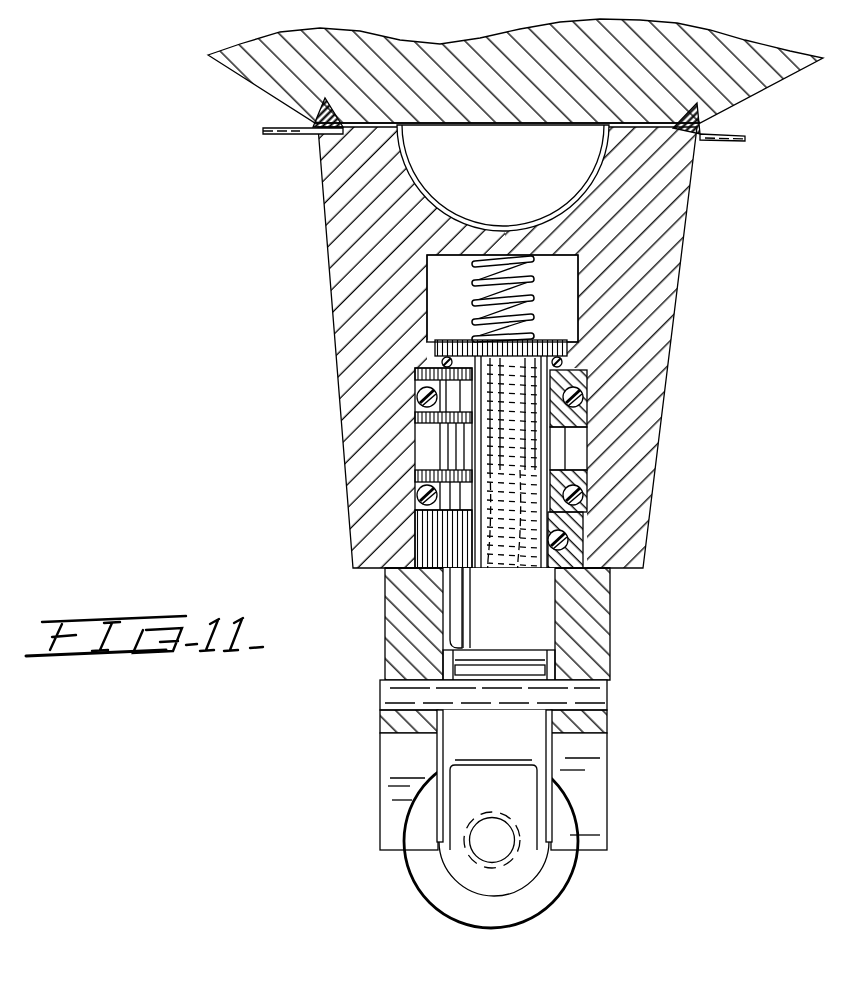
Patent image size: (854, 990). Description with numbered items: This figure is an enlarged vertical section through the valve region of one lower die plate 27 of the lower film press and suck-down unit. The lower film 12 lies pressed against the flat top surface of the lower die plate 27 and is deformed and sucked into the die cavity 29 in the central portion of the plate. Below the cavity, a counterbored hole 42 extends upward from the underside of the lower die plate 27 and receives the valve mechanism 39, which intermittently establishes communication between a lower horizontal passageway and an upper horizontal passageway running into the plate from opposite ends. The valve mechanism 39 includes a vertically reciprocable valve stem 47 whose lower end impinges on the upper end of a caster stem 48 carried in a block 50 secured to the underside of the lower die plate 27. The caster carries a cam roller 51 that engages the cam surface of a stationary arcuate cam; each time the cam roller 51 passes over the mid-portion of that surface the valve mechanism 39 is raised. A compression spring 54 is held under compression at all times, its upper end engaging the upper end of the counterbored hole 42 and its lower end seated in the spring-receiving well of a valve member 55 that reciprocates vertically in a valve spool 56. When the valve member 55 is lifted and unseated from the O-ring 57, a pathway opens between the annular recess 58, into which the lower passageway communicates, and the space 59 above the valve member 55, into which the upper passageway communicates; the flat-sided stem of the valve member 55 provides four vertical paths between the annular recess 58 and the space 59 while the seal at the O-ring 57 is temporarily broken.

The lower film 12 is at (305, 136).
The lower die plate 27 is at (328, 280).
The die cavity 29 is at (516, 182).
The valve mechanism 39 is at (432, 483).
The counterbored hole 42 is at (570, 462).
The valve stem 47 is at (552, 630).
The caster stem 48 is at (565, 660).
The block 50 is at (526, 804).
The cam roller 51 is at (577, 874).
The compression spring 54 is at (524, 326).
The valve member 55 is at (575, 345).
The valve spool 56 is at (595, 415).
The O-ring 57 is at (562, 362).
The annular recess 58 is at (423, 430).
The space 59 is at (440, 306).